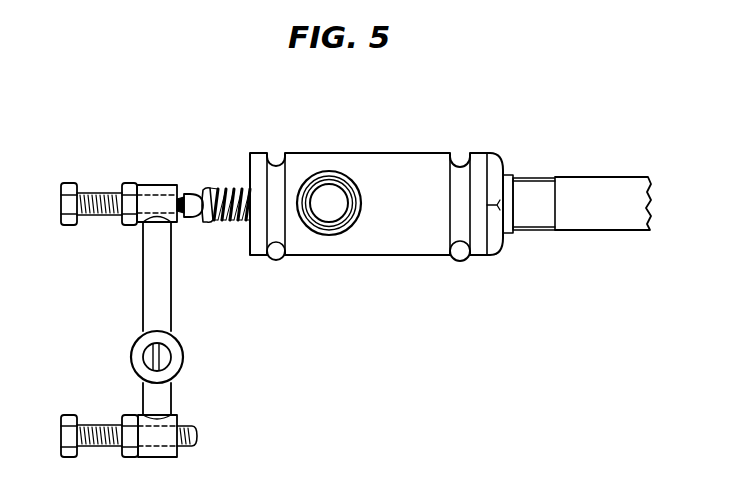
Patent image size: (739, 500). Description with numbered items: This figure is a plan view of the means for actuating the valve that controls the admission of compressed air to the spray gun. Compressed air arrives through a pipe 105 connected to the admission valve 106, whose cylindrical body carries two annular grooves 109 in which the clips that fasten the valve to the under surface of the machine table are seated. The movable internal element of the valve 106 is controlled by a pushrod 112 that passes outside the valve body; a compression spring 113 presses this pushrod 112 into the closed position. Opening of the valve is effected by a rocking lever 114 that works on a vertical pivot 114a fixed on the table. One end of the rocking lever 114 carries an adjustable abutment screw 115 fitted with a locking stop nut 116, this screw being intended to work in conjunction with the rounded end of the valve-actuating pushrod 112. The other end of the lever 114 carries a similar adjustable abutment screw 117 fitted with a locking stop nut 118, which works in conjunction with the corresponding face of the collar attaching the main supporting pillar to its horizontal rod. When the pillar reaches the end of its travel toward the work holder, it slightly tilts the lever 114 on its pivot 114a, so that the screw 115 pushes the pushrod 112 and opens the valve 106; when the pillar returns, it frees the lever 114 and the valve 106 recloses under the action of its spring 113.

The pipe 105 is at (603, 188).
The admission valve 106 is at (393, 177).
The annular grooves 109 is at (277, 260).
The pushrod 112 is at (194, 202).
The compression spring 113 is at (228, 223).
The rocking lever 114 is at (150, 277).
The vertical pivot 114a is at (178, 357).
The adjustable abutment screw 115 is at (68, 183).
The locking stop nut 116 is at (130, 183).
The adjustable abutment screw 117 is at (88, 449).
The locking stop nut 118 is at (129, 453).